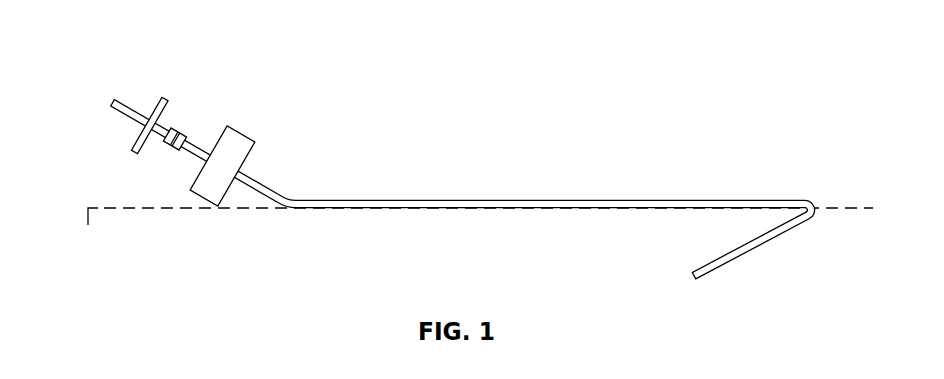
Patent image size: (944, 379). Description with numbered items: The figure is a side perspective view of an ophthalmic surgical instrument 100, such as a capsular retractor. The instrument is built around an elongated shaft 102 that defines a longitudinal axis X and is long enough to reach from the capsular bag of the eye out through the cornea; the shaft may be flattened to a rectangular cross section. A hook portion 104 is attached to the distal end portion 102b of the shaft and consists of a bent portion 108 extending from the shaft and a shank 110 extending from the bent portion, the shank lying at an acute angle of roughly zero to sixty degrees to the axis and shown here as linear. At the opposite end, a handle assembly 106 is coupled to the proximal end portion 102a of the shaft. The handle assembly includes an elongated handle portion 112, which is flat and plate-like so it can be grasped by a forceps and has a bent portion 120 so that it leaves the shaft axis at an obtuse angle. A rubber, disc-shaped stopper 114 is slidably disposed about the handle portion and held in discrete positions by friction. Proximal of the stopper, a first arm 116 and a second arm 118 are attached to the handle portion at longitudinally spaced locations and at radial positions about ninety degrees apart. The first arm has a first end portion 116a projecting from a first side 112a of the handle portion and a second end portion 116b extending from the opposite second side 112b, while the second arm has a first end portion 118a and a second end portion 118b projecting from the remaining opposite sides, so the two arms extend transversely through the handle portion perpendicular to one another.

The ophthalmic surgical instrument 100 is at (441, 167).
The elongated shaft 102 is at (458, 187).
The proximal end portion 102a is at (323, 208).
The distal end portion 102b is at (790, 199).
The hook portion 104 is at (783, 261).
The handle assembly 106 is at (184, 146).
The bent portion 108 is at (852, 210).
The shank 110 is at (730, 262).
The elongated handle portion 112 is at (100, 93).
The first side 112a is at (248, 188).
The second side 112b is at (263, 180).
The stopper 114 is at (243, 130).
The first arm 116 is at (114, 80).
The first end portion 116a is at (140, 150).
The second end portion 116b is at (146, 93).
The second arm 118 is at (158, 178).
The first end portion 118a is at (167, 140).
The second end portion 118b is at (177, 132).
The bent portion 120 is at (293, 208).